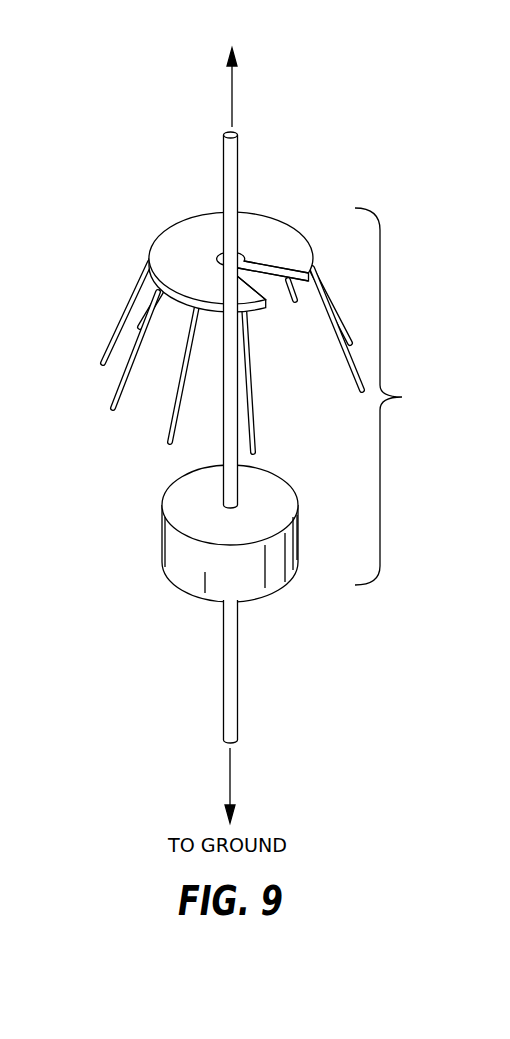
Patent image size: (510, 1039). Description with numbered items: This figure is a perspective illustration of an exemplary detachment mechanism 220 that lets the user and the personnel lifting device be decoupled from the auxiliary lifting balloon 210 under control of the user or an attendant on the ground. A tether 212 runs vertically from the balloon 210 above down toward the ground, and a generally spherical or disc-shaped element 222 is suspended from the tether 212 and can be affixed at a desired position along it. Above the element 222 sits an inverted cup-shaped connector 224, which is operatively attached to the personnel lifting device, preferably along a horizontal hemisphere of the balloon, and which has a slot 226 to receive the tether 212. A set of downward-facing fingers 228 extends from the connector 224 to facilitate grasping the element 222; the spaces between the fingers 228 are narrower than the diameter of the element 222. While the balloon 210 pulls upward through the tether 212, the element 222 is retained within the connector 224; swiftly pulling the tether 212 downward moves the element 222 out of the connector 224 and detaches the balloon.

The balloon 210 is at (229, 74).
The tether 212 is at (232, 162).
The detachment mechanism 220 is at (249, 402).
The spherical or disc-shaped element 222 is at (277, 580).
The cup-shaped connector 224 is at (292, 208).
The slot 226 is at (276, 292).
The downward-facing fingers 228 is at (128, 370).